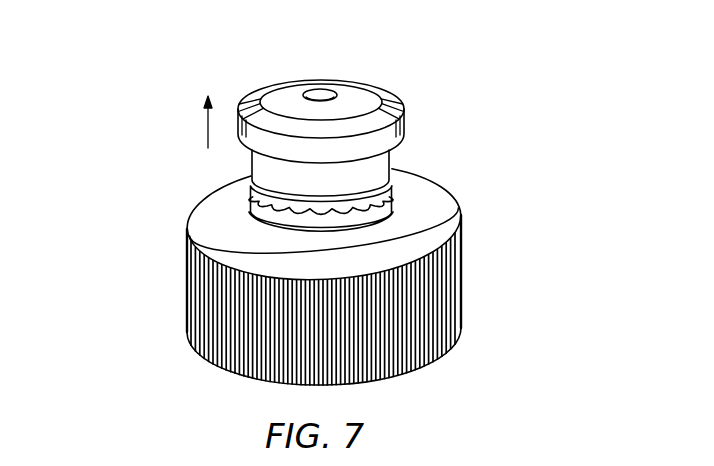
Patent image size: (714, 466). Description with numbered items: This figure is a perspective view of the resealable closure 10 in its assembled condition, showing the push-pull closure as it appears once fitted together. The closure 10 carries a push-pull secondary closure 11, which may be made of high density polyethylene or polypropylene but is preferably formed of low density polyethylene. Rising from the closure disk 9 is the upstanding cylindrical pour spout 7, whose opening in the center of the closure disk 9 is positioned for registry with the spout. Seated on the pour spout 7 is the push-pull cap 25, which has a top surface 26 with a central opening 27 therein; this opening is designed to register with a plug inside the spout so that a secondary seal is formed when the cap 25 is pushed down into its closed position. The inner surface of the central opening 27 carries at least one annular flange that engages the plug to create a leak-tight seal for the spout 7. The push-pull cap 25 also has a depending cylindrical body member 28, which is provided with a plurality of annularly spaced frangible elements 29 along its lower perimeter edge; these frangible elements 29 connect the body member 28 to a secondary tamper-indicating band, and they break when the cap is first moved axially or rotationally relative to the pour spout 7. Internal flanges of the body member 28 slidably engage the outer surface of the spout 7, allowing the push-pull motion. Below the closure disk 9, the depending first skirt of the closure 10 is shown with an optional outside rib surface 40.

The upstanding cylindrical pour spout 7 is at (188, 229).
The closure disk 9 is at (417, 196).
The resealable closure 10 is at (321, 265).
The push-pull secondary closure 11 is at (331, 131).
The push-pull cap 25 is at (392, 92).
The top surface 26 is at (341, 80).
The central opening 27 is at (317, 91).
The depending cylindrical body member 28 is at (278, 178).
The frangible elements 29 is at (395, 222).
The outside rib surface 40 is at (187, 288).